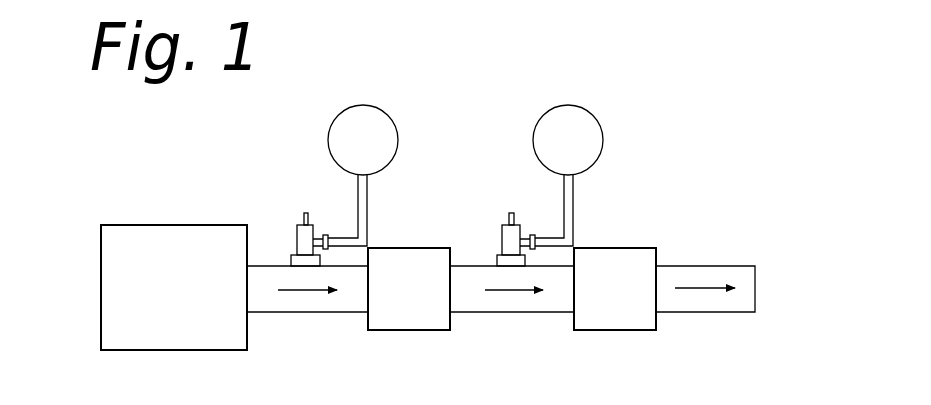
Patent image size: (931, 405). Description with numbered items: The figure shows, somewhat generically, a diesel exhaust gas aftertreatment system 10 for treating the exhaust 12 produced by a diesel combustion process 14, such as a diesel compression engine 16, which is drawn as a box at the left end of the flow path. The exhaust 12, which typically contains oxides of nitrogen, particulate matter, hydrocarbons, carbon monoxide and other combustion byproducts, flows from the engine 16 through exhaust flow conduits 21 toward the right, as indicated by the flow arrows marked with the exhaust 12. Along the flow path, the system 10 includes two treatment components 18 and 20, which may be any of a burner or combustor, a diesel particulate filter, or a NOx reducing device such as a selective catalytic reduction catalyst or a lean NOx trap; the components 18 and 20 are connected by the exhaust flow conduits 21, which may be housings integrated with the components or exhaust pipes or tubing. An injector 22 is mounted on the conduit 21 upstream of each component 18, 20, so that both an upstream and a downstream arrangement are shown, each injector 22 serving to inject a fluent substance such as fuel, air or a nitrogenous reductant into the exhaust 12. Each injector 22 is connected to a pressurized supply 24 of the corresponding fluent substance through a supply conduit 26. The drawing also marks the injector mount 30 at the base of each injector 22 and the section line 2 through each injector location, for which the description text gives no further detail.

The diesel exhaust gas aftertreatment system 10 is at (742, 220).
The exhaust 12 is at (300, 290).
The diesel combustion process 14 is at (182, 300).
The diesel compression engine 16 is at (100, 237).
The component 18 is at (419, 300).
The component 20 is at (620, 300).
The exhaust flow conduit 21 is at (350, 313).
The injector 22 is at (287, 230).
The pressurized supply 24 is at (351, 154).
The supply conduit 26 is at (574, 194).
The valve mounting base 30 is at (288, 258).
The section line 2- 2 is at (300, 195).